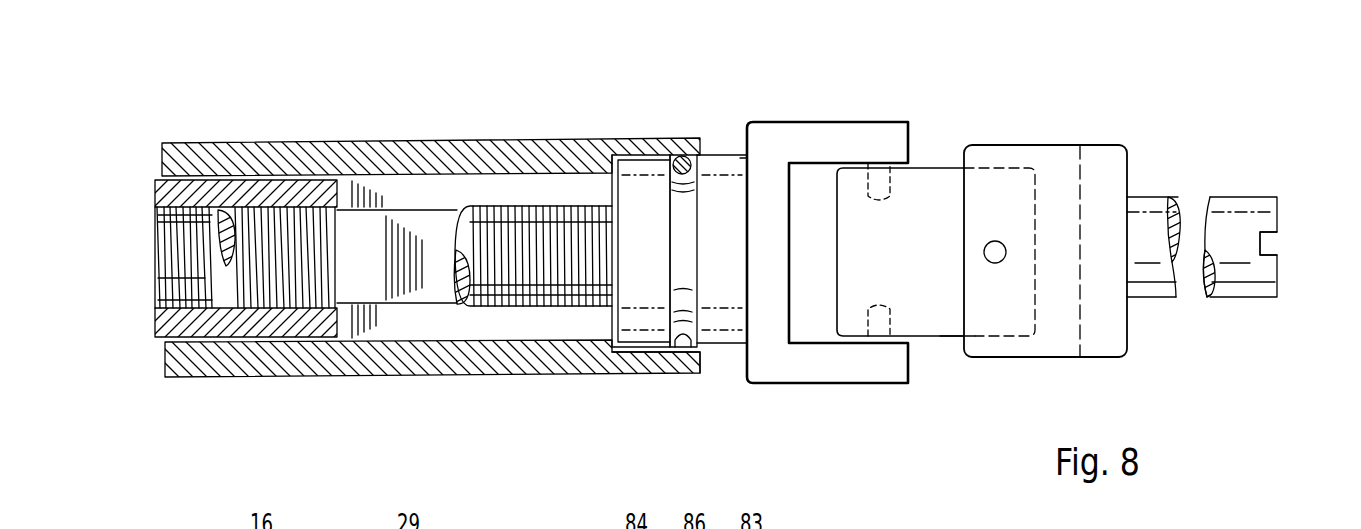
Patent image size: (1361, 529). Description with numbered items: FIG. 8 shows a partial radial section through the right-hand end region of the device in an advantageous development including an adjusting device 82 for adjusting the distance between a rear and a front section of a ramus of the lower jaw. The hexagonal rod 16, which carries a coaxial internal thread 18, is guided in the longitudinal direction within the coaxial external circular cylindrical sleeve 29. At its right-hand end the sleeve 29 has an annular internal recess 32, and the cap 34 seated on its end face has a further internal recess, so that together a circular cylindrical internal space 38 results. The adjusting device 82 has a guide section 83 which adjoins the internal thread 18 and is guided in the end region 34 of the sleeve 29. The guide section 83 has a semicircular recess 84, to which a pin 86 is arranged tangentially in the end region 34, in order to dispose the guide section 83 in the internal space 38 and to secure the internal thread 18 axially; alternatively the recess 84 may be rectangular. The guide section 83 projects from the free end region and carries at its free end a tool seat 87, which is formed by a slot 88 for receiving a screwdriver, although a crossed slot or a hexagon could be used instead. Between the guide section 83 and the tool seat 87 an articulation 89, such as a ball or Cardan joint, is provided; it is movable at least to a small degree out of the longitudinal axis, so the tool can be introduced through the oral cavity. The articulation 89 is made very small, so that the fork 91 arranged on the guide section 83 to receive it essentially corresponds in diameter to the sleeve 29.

The hexagonal rod 16 is at (228, 190).
The internal thread 18 is at (275, 300).
The sleeve 29 is at (408, 155).
The annular internal recess 32 is at (618, 160).
The cap 34 is at (678, 365).
The internal space 38 is at (689, 345).
The adjusting device 82 is at (962, 110).
The guide section 83 is at (722, 185).
The semicircular recess 84 is at (678, 205).
The pin 86 is at (680, 158).
The tool seat 87 is at (1274, 181).
The slot 88 is at (1275, 243).
The articulation 89 is at (953, 348).
The fork 91 is at (836, 145).